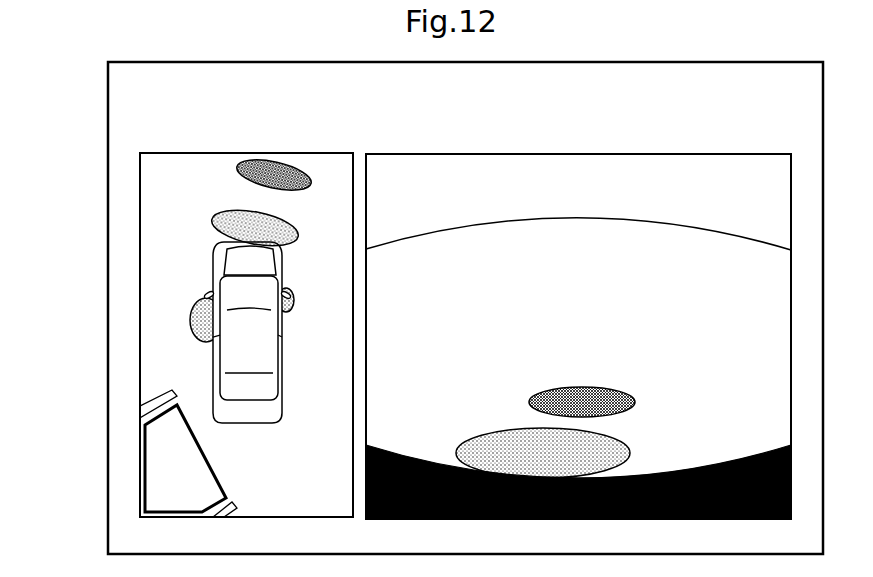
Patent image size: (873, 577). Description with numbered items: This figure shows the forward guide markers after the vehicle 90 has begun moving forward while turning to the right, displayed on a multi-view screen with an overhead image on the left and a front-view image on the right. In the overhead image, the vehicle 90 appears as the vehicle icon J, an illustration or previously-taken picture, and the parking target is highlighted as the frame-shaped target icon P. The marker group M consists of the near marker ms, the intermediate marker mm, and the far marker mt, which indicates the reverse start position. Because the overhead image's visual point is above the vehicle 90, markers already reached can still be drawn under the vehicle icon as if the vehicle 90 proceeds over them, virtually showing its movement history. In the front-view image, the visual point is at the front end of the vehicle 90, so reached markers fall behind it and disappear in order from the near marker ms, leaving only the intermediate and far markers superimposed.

The vehicle 90 is at (727, 462).